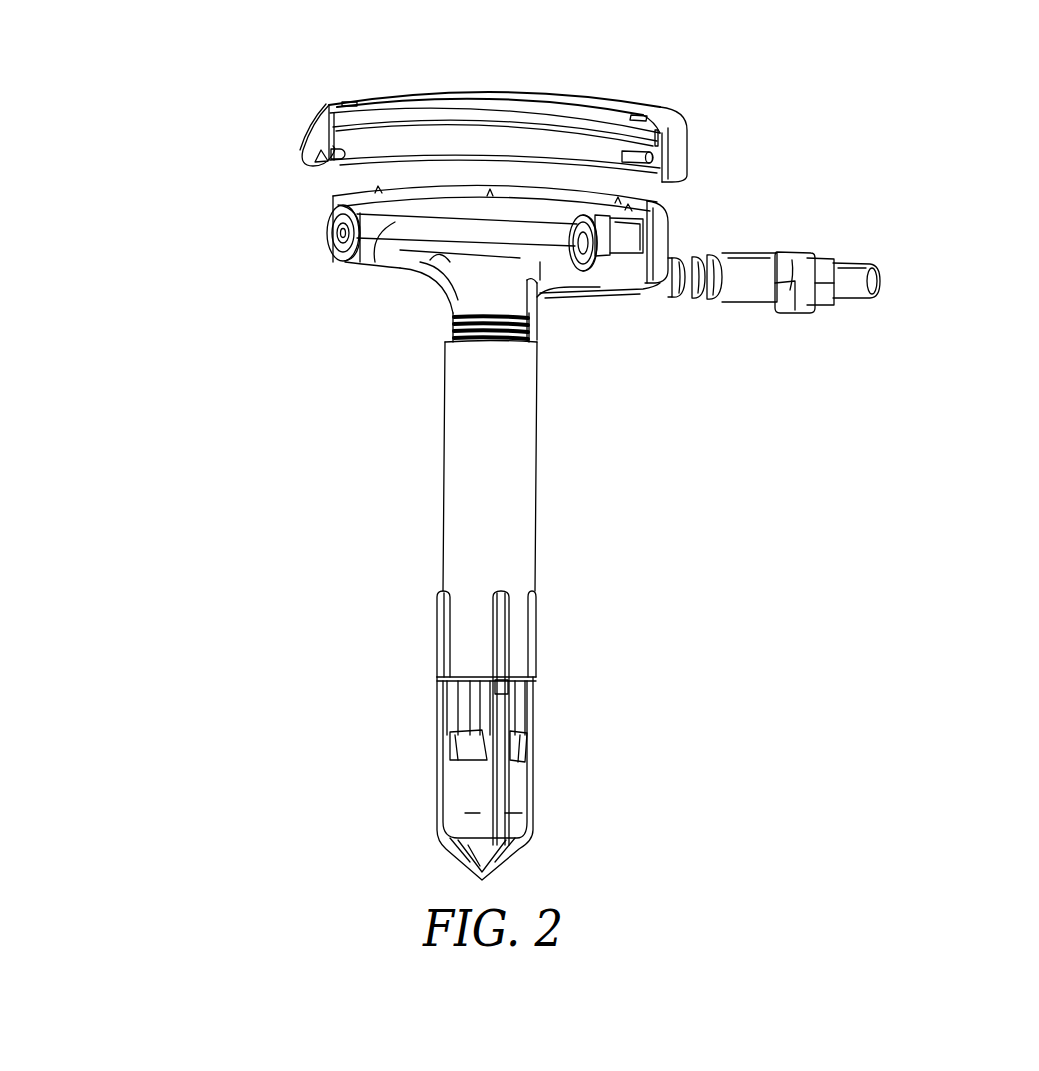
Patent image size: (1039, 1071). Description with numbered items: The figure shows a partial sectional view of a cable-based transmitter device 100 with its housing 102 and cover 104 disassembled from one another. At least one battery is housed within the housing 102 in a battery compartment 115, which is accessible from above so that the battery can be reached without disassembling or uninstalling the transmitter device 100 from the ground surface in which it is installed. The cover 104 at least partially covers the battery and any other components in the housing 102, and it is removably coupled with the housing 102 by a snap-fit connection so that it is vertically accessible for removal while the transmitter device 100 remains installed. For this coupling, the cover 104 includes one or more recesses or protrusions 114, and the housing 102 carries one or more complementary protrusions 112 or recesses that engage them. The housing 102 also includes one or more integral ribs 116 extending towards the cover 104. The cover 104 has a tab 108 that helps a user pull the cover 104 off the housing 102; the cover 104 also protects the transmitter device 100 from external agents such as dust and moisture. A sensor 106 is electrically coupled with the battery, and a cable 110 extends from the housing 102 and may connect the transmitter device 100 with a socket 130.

The transmitter device 100 is at (862, 93).
The housing 102 is at (578, 305).
The cover 104 is at (592, 92).
The sensor 106 is at (533, 718).
The tab 108 is at (300, 148).
The cable 110 is at (658, 288).
The complementary protrusions 112 is at (670, 243).
The recesses or protrusions 114 is at (333, 153).
The battery compartment 115 is at (474, 253).
The integral ribs 116 is at (385, 283).
The socket 130 is at (797, 312).